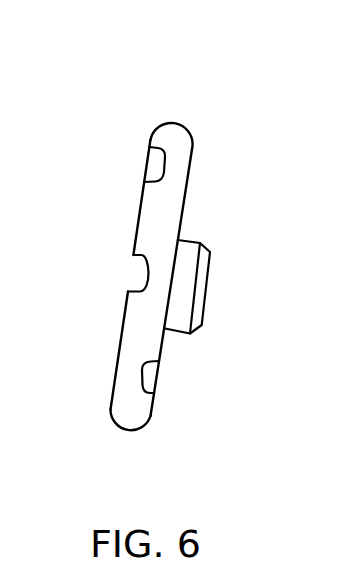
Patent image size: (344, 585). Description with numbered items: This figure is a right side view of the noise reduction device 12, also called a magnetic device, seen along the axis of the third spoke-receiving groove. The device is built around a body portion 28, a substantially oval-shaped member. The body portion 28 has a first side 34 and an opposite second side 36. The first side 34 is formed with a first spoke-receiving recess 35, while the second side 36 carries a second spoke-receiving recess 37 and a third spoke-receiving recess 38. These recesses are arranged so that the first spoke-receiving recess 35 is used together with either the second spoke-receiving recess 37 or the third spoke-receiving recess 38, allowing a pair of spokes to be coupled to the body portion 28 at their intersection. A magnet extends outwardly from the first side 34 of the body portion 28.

The mounting bracket 12 is at (184, 79).
The first side 34 is at (186, 189).
The second side 36 is at (141, 205).
The second spoke-receiving recess 37 is at (145, 165).
The third spoke-receiving recess 38 is at (114, 268).
The first spoke-receiving recess 35 is at (166, 378).
The body portion 28 is at (124, 437).